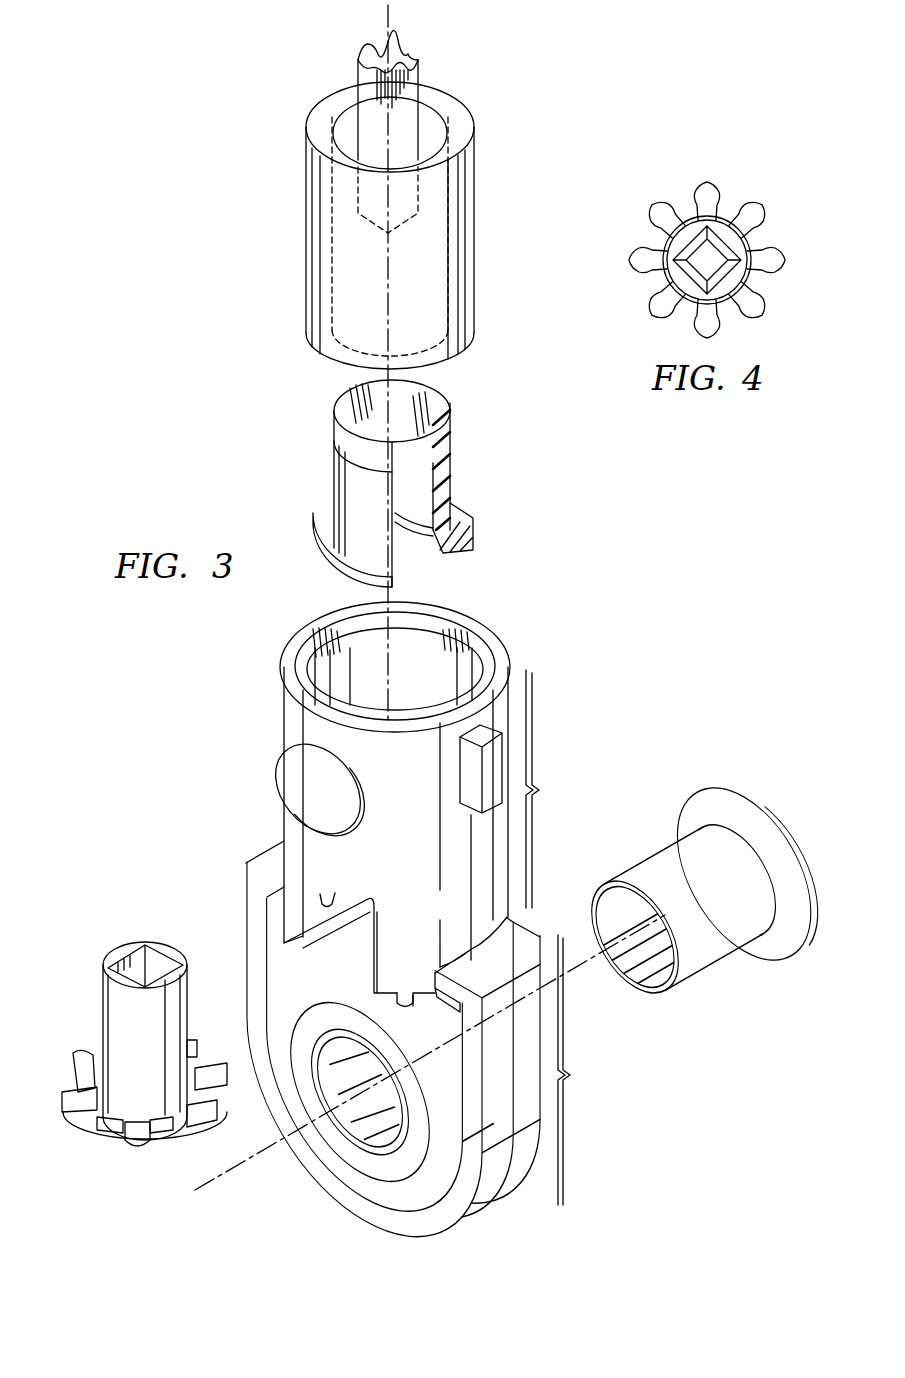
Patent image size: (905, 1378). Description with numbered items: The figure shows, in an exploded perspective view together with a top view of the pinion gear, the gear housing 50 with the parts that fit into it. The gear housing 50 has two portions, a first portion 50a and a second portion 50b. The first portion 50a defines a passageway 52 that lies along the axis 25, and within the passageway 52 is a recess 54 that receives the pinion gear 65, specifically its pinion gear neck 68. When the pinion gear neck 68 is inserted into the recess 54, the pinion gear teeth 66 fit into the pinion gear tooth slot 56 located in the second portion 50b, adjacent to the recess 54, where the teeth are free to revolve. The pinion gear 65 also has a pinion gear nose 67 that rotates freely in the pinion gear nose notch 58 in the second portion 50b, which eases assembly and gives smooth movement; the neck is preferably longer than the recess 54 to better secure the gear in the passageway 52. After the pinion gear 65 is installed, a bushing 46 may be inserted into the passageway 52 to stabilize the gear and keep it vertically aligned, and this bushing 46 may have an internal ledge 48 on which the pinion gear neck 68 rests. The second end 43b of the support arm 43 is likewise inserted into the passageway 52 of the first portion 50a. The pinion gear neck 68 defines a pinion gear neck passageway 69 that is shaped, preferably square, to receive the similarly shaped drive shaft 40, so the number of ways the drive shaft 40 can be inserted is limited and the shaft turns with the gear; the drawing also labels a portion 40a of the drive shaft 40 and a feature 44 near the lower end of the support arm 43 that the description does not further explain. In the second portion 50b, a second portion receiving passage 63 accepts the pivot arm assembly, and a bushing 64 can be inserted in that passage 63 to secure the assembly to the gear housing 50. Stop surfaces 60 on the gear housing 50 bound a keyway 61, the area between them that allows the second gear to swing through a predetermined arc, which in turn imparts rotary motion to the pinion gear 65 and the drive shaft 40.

In FIG. 3, the axis 25 is at (384, 18).
In FIG. 3, the drive shaft 40 is at (418, 67).
In FIG. 3, the tapered end of shaft 40a is at (364, 224).
In FIG. 3, the support arm 43 is at (475, 186).
In FIG. 3, the second end of the support arm 43b is at (474, 318).
In FIG. 3, the opening 44 is at (348, 348).
In FIG. 3, the bushing 46 is at (333, 473).
In FIG. 3, the internal ledge 48 is at (410, 452).
In FIG. 3, the passageway 52 is at (424, 648).
In FIG. 3, the gear housing 50 is at (574, 706).
In FIG. 3, the first portion 50a is at (556, 789).
In FIG. 3, the second portion 50b is at (589, 1070).
In FIG. 3, the recess 54 is at (298, 926).
In FIG. 3, the pinion gear tooth slot 56 is at (441, 1006).
In FIG. 3, the pinion gear nose notch 58 is at (404, 1004).
In FIG. 3, the keyway 61 is at (310, 992).
In FIG. 3, the stop surfaces 60 is at (282, 1096).
In FIG. 3, the second portion receiving passage 63 is at (374, 1106).
In FIG. 3, the bushing 64 is at (628, 872).
In FIG. 3, the pinion gear 65 is at (96, 924).
In FIG. 4, the pinion gear 65 is at (736, 186).
In FIG. 3, the pinion gear neck 68 is at (103, 1010).
In FIG. 3, the pinion gear neck passageway 69 is at (155, 957).
In FIG. 4, the pinion gear neck passageway 69 is at (717, 258).
In FIG. 3, the pinion gear teeth 66 is at (76, 1084).
In FIG. 4, the pinion gear teeth 66 is at (760, 298).
In FIG. 3, the pinion gear nose 67 is at (138, 1145).